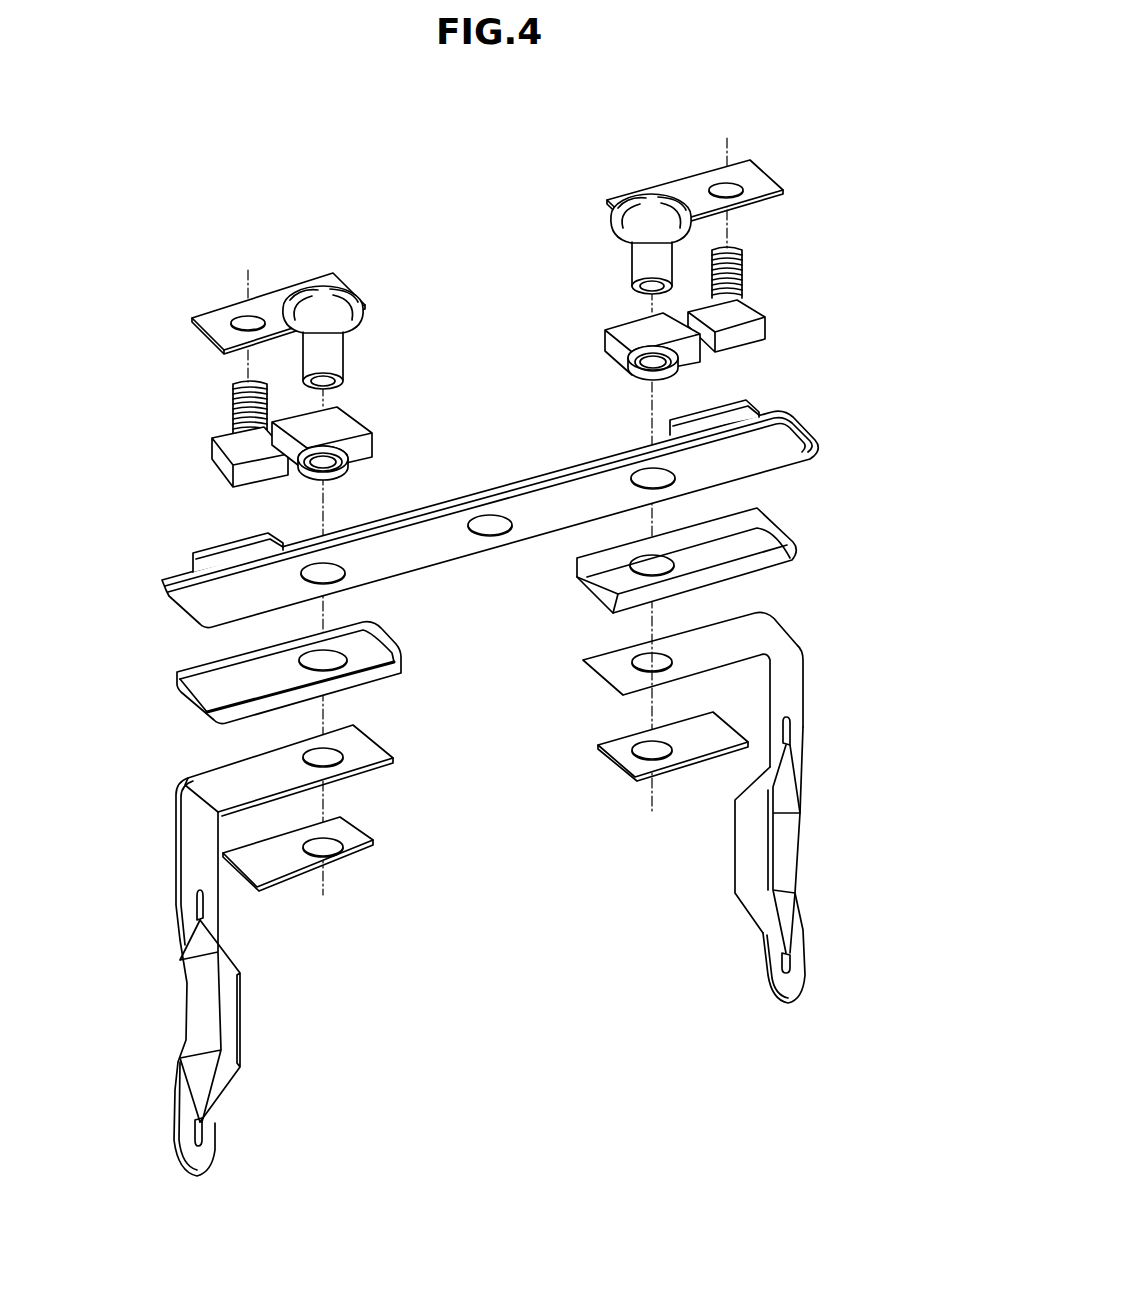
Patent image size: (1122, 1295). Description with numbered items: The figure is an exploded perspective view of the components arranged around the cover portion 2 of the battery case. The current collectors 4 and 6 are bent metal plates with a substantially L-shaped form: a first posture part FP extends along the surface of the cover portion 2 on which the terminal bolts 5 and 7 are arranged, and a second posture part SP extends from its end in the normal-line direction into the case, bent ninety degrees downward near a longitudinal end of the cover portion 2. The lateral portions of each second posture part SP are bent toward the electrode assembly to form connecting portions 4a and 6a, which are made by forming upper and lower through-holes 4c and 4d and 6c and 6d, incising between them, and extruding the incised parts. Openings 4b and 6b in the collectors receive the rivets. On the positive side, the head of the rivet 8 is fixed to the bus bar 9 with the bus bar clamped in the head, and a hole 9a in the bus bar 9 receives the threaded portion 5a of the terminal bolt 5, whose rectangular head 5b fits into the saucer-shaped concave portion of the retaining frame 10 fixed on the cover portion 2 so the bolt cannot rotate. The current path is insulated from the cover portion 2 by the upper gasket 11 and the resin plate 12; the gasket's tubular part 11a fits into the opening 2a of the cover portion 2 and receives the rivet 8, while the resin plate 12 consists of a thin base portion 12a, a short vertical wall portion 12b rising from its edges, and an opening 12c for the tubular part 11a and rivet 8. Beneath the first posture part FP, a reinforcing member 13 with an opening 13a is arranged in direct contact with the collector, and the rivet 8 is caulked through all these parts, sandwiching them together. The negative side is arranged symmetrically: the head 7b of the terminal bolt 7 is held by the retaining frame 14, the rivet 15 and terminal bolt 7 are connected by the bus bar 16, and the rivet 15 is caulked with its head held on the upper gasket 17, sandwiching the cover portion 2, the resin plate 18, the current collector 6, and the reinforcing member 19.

The cover portion 2 is at (490, 499).
The opening of the cover portion 2a is at (348, 571).
The current collector 4 is at (274, 950).
The connecting portion 4a is at (240, 1048).
The opening of the current collector 4b is at (345, 763).
The upper through-hole 4c is at (204, 900).
The lower through-hole 4d is at (208, 1138).
The terminal bolt 5 is at (229, 428).
The threaded portion 5a is at (240, 432).
The head of the terminal bolt 5b is at (228, 486).
The current collector 6 is at (719, 807).
The connecting portion 6a is at (735, 887).
The opening of the current collector 6b is at (655, 675).
The upper through-hole 6c is at (798, 732).
The lower through-hole 6d is at (800, 964).
The terminal bolt 7 is at (742, 272).
The head of the terminal bolt 7b is at (766, 327).
The rivet 8 is at (352, 326).
The bus bar 9 is at (267, 298).
The hole of the bus bar 9a is at (232, 344).
The retaining frame 10 is at (210, 556).
The upper gasket 11 is at (358, 441).
The tubular part 11a is at (347, 485).
The resin plate 12 is at (302, 668).
The base portion 12a is at (210, 693).
The vertical wall portion 12b is at (401, 664).
The opening of the resin plate 12c is at (343, 672).
The reinforcing member 13 is at (325, 858).
The opening of the reinforcing member 13a is at (330, 858).
The retaining frame 14 is at (740, 402).
The rivet 15 is at (620, 236).
The bus bar 16 is at (766, 173).
The upper gasket 17 is at (605, 340).
The resin plate 18 is at (772, 522).
The reinforcing member 19 is at (612, 767).
The first posture part FP is at (275, 745).
The second posture part SP is at (172, 847).